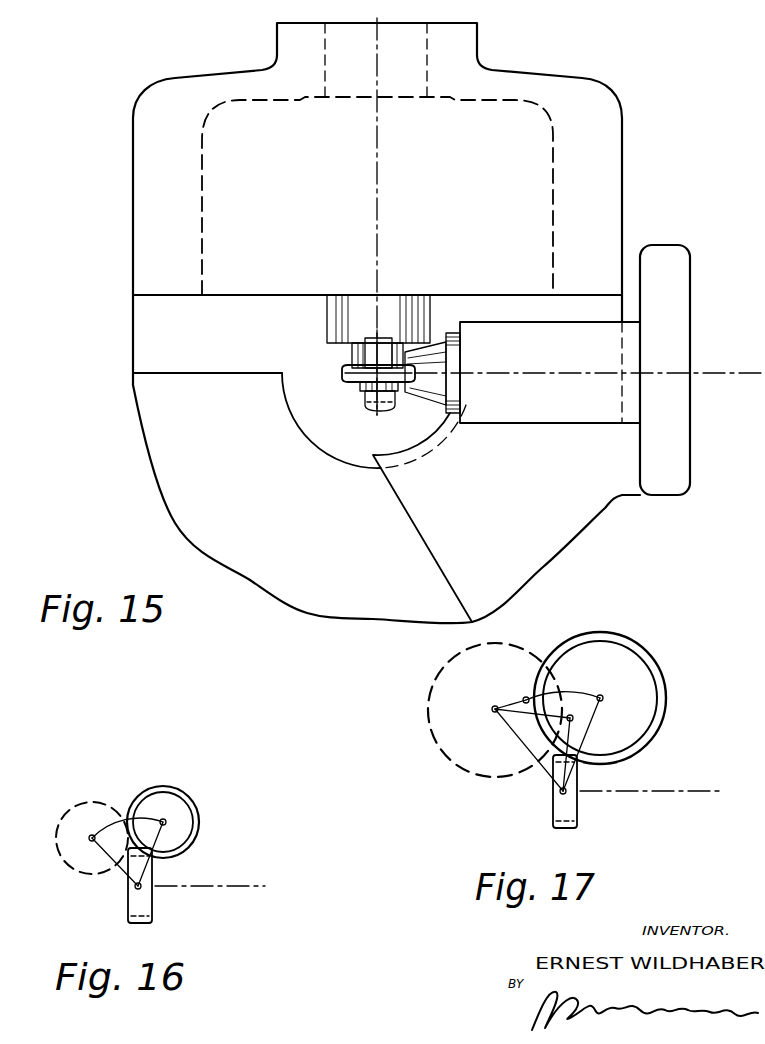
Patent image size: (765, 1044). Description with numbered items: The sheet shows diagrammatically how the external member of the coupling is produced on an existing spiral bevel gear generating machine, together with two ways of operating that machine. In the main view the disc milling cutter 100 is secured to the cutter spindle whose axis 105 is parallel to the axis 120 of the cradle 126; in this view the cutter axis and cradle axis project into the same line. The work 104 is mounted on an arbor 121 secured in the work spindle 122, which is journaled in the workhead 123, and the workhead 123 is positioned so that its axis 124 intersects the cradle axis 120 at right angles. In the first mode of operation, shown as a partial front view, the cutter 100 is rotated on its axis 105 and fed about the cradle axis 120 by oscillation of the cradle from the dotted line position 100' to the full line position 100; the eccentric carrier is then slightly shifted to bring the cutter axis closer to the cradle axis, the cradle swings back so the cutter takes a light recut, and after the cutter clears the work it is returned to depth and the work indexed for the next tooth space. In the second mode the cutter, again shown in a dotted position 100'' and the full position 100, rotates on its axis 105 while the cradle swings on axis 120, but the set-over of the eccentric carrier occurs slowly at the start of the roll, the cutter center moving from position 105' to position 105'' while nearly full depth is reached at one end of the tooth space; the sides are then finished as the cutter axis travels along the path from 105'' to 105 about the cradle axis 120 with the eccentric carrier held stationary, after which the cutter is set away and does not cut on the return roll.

In FIG. 15, the cutter 100 is at (361, 385).
In FIG. 16, the cutter 100 is at (187, 822).
In FIG. 17, the cutter 100 is at (620, 698).
In FIG. 16, the dotted line position of cutter 100' is at (96, 832).
In FIG. 17, the cutter position 100'' is at (475, 710).
In FIG. 15, the work 104 is at (376, 411).
In FIG. 17, the work 104 is at (563, 808).
In FIG. 15, the cutter axis 105 is at (410, 216).
In FIG. 16, the cutter axis 105 is at (157, 826).
In FIG. 17, the cutter axis 105 is at (583, 733).
In FIG. 17, the initial cutter center position 105' is at (508, 748).
In FIG. 17, the cutter center position after set-over 105'' is at (510, 690).
In FIG. 15, the cradle axis 120 is at (428, 302).
In FIG. 16, the cradle axis 120 is at (137, 889).
In FIG. 17, the cradle axis 120 is at (558, 793).
In FIG. 15, the arbor 121 is at (420, 395).
In FIG. 15, the work spindle 122 is at (453, 333).
In FIG. 15, the workhead 123 is at (523, 413).
In FIG. 15, the workhead axis 124 is at (541, 373).
In FIG. 16, the workhead axis 124 is at (212, 884).
In FIG. 15, the cradle 126 is at (556, 222).